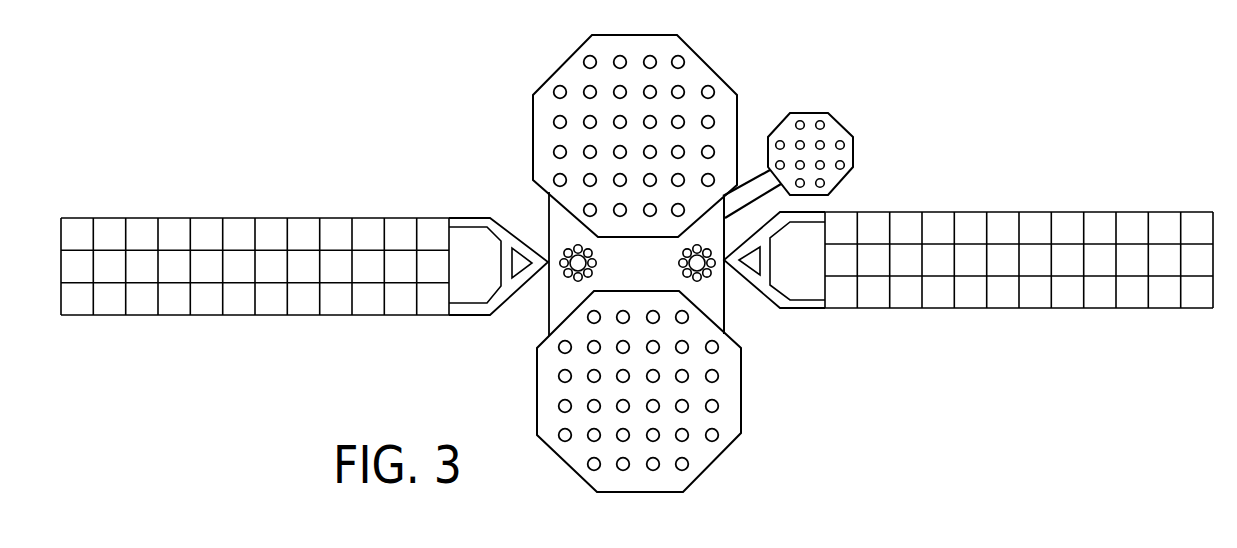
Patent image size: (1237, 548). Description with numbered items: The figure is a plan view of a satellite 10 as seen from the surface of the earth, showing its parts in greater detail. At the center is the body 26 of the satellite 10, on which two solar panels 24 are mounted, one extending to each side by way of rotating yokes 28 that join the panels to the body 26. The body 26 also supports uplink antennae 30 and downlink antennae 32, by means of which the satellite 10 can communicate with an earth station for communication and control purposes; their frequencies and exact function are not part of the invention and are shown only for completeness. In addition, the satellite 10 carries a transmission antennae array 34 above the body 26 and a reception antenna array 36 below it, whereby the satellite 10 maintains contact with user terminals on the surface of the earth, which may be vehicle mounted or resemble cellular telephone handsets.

The satellite 10 is at (549, 322).
The solar panels 24 is at (263, 218).
The body 26 is at (724, 320).
The rotating yokes 28 is at (467, 316).
The uplink antennae 30 is at (572, 244).
The downlink antennae 32 is at (812, 110).
The transmission antennae array 34 is at (679, 36).
The reception antenna array 36 is at (720, 455).